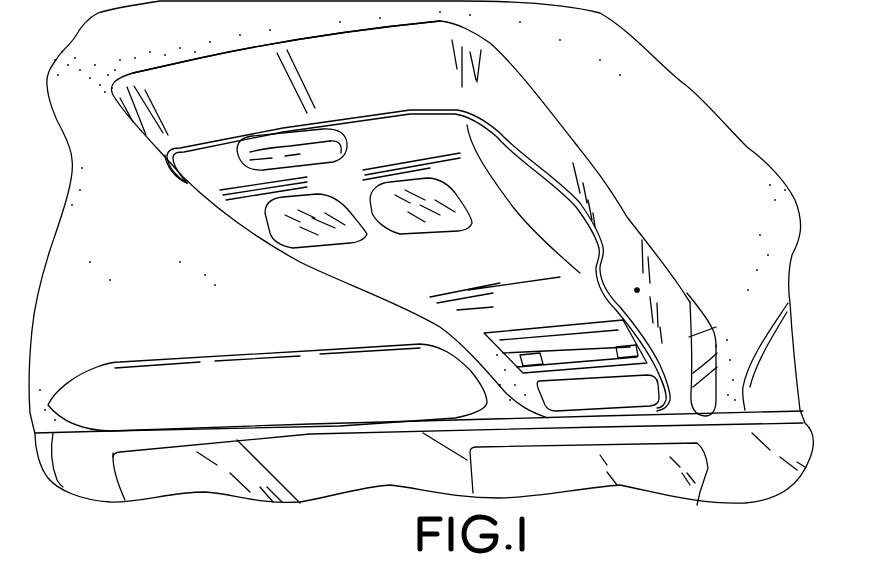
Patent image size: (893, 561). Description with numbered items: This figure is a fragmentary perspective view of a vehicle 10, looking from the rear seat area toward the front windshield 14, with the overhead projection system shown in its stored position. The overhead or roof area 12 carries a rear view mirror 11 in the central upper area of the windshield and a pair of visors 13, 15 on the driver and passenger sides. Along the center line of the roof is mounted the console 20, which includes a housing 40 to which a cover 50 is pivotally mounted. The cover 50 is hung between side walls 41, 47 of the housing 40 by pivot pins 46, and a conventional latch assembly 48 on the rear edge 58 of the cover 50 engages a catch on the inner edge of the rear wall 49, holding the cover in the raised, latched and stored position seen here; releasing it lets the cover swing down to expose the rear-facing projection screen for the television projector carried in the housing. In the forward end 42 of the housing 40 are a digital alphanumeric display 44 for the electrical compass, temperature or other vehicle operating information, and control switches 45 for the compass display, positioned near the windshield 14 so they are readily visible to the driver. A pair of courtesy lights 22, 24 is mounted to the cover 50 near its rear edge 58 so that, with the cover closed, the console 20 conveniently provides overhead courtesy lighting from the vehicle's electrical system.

The vehicle 10 is at (713, 441).
The rear view mirror 11 is at (661, 482).
The roof area 12 is at (731, 186).
The visor 13 is at (266, 401).
The front windshield 14 is at (370, 482).
The visor 15 is at (783, 370).
The console 20 is at (669, 103).
The courtesy light 22 is at (310, 243).
The courtesy light 24 is at (397, 225).
The housing 40 is at (603, 189).
The side wall 41 is at (656, 267).
The forward end 42 is at (693, 337).
The display 44 is at (605, 409).
The control switches 45 is at (591, 352).
The pivot pins 46 is at (639, 290).
The side wall 47 is at (175, 185).
The latch assembly 48 is at (291, 143).
The rear wall 49 is at (197, 67).
The cover 50 is at (516, 177).
The rear edge 58 is at (387, 143).